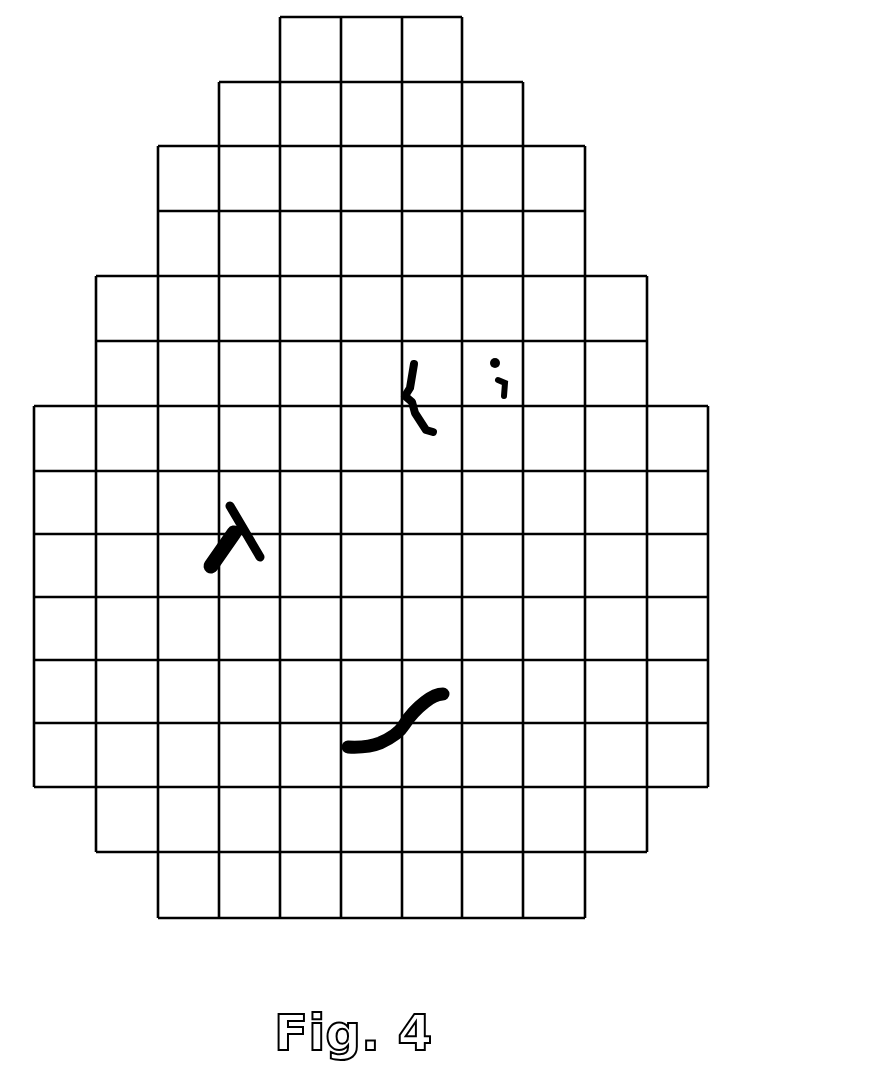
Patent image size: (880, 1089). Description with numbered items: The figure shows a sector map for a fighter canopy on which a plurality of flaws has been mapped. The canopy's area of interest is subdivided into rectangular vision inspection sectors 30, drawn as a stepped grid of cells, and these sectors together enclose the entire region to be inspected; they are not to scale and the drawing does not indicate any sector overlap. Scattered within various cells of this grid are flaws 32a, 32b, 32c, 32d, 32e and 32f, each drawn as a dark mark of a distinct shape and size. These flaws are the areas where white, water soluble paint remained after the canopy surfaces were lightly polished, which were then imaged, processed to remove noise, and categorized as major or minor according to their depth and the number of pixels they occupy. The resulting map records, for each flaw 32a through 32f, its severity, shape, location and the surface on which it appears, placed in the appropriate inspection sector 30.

The vision inspection sectors 30 is at (488, 128).
The flaw 32a is at (205, 570).
The flaw 32b is at (247, 528).
The flaw 32c is at (418, 387).
The flaw 32d is at (497, 357).
The flaw 32e is at (507, 380).
The flaw 32f is at (440, 707).